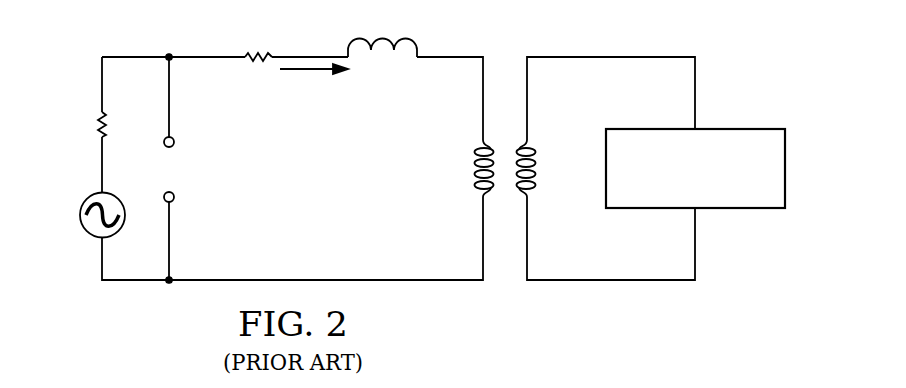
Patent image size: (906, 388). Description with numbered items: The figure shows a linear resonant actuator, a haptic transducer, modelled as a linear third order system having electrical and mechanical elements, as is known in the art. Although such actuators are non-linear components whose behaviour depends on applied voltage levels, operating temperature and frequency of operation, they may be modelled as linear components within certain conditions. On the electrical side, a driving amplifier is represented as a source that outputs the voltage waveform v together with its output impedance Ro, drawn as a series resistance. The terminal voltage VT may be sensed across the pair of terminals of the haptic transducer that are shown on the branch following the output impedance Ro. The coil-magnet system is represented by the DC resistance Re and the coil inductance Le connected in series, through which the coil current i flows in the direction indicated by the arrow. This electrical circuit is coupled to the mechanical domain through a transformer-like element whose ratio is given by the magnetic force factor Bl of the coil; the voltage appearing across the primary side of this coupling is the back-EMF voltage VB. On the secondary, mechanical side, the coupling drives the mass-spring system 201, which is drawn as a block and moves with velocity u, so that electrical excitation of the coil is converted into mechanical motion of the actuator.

The mass-spring system 201 is at (786, 168).
The output impedance Ro is at (86, 124).
The DC resistance Re is at (258, 43).
The coil inductance Le is at (382, 35).
The magnetic force factor Bl is at (498, 113).
The back-EMF voltage VB is at (456, 168).
The velocity u is at (547, 168).
The terminal voltage VT is at (169, 169).
The voltage waveform v is at (84, 215).
The coil current i is at (314, 78).